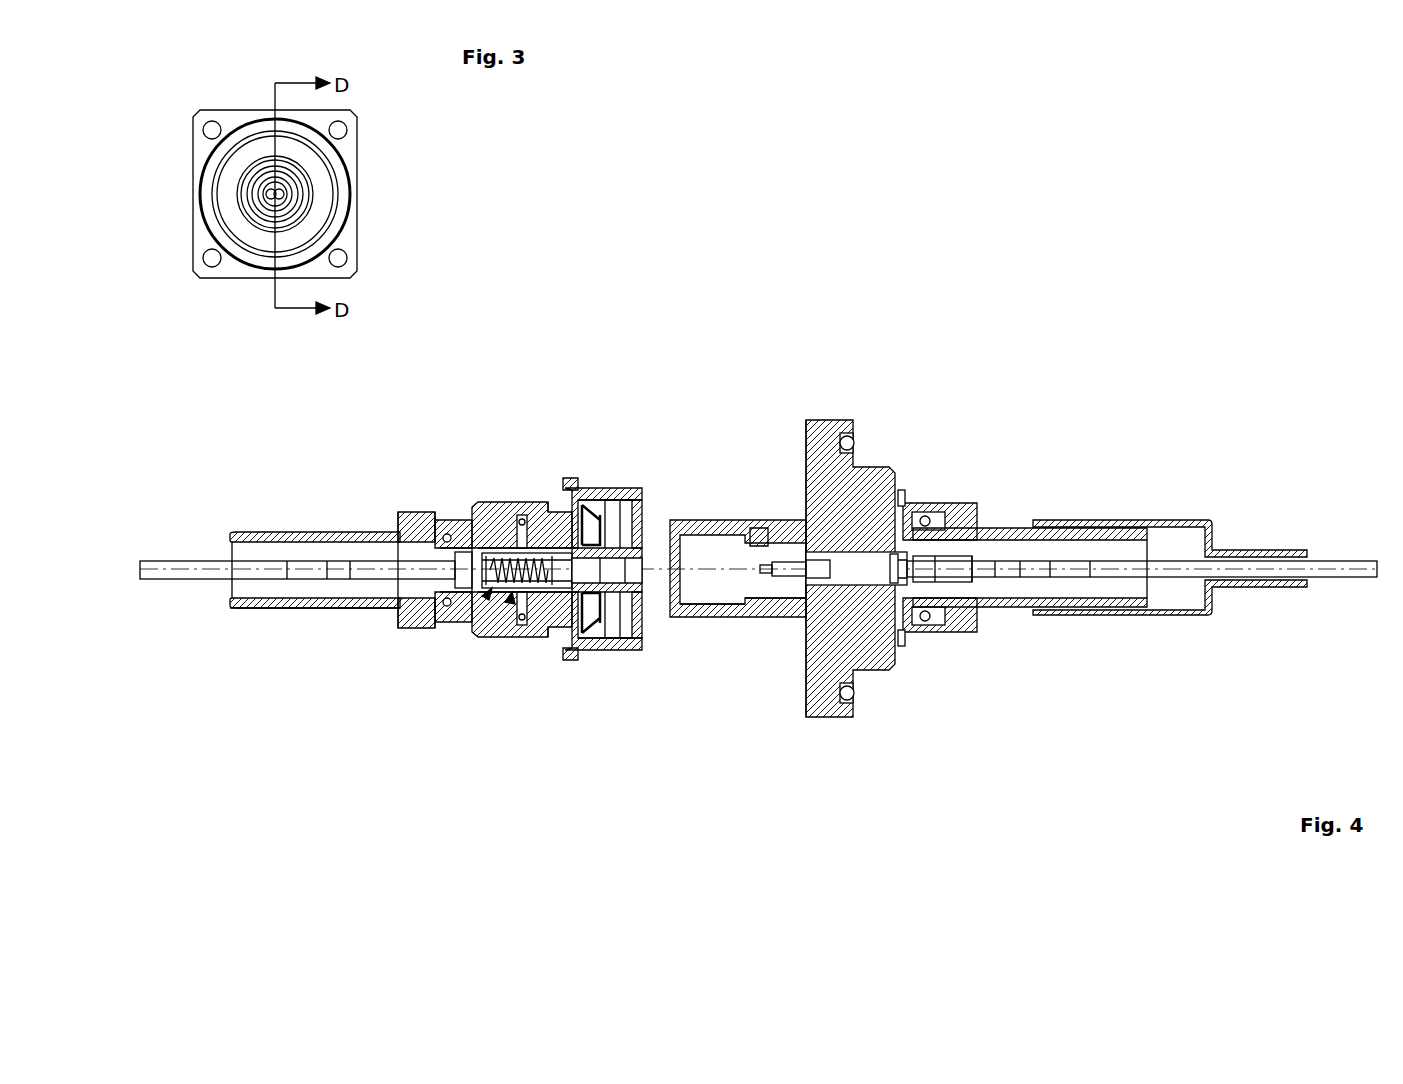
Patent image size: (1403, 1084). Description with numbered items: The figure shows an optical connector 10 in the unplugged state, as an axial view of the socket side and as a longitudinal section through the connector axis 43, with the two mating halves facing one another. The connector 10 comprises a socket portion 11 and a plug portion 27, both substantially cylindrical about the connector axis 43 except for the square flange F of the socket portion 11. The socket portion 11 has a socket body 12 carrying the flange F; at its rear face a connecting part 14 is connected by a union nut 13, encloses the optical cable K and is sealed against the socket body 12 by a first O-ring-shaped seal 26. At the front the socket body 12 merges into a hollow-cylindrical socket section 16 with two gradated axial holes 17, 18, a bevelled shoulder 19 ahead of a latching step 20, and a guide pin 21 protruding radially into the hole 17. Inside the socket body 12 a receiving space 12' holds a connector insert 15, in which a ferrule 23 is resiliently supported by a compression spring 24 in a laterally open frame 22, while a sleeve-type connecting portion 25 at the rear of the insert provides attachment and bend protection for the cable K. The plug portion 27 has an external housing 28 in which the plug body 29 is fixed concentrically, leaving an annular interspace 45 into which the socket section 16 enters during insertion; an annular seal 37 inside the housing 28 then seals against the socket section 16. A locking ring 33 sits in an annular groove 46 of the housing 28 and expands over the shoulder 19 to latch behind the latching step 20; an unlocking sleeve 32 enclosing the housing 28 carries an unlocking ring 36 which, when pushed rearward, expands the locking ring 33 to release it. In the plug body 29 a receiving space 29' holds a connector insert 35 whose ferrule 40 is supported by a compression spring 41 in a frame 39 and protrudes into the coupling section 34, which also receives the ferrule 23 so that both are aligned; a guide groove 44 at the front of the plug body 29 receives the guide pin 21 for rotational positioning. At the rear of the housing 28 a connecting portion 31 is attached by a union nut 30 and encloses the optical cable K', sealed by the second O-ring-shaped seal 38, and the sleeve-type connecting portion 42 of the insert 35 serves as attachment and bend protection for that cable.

In FIG. 4, the connector 10 is at (704, 312).
In FIG. 4, the socket portion 11 is at (835, 377).
In FIG. 4, the socket body 12 is at (876, 542).
In FIG. 4, the receiving space 12' is at (880, 693).
In FIG. 4, the union nut 13 is at (1000, 530).
In FIG. 4, the connecting part 14 is at (1035, 522).
In FIG. 4, the connector insert 15 is at (918, 503).
In FIG. 4, the socket section 16 is at (695, 520).
In FIG. 4, the axial hole 17 is at (771, 587).
In FIG. 4, the axial hole 18 is at (695, 617).
In FIG. 4, the bevelled shoulder 19 is at (723, 618).
In FIG. 4, the latching step 20 is at (742, 618).
In FIG. 4, the guide pin 21 is at (753, 520).
In FIG. 4, the frame 22 is at (865, 590).
In FIG. 4, the ferrule 23 is at (788, 562).
In FIG. 4, the compression spring 24 is at (912, 625).
In FIG. 4, the connecting portion 25 is at (940, 570).
In FIG. 4, the first O-ring-shaped seal 26 is at (948, 632).
In FIG. 4, the plug portion 27 is at (537, 428).
In FIG. 4, the housing 28 is at (490, 505).
In FIG. 4, the plug body 29 is at (510, 693).
In FIG. 4, the receiving space 29' is at (468, 695).
In FIG. 4, the union nut 30 is at (400, 518).
In FIG. 4, the connecting portion 31 is at (367, 608).
In FIG. 4, the unlocking sleeve 32 is at (628, 490).
In FIG. 4, the locking ring 33 is at (587, 490).
In FIG. 4, the coupling section 34 is at (617, 640).
In FIG. 4, the connector insert 35 is at (430, 598).
In FIG. 4, the unlocking ring 36 is at (609, 490).
In FIG. 4, the annular seal 37 is at (518, 512).
In FIG. 4, the nut 38 is at (436, 505).
In FIG. 4, the frame 39 is at (505, 512).
In FIG. 4, the ferrule 40 is at (554, 627).
In FIG. 4, the compression spring 41 is at (447, 630).
In FIG. 4, the connecting portion 42 is at (398, 605).
In FIG. 4, the connector axis 43 is at (240, 567).
In FIG. 4, the guide groove 44 is at (618, 490).
In FIG. 4, the annular interspace 45 is at (562, 487).
In FIG. 4, the annular groove 46 is at (592, 653).
In FIG. 3, the flange F is at (347, 240).
In FIG. 4, the flange F is at (827, 435).
In FIG. 4, the optical cable K is at (1142, 474).
In FIG. 4, the optical cable K' is at (297, 473).